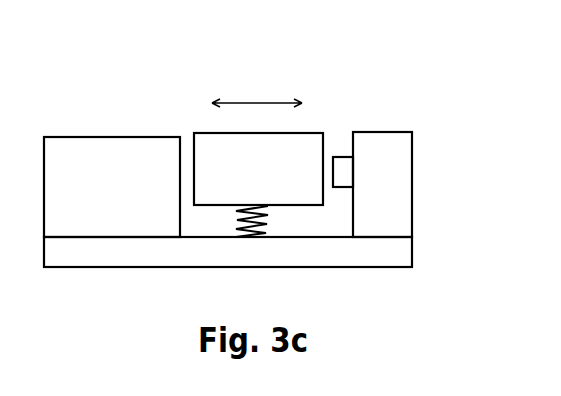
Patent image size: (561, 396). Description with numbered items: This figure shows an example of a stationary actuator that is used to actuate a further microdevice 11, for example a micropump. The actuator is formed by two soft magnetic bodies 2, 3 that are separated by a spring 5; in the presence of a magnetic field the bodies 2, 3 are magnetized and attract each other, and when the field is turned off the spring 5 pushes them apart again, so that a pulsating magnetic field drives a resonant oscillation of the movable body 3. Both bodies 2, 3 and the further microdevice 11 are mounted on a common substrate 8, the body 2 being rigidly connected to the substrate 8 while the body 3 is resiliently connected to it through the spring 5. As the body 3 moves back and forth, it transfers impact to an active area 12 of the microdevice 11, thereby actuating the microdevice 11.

The soft magnetic body 2 is at (109, 137).
The soft magnetic body 3 is at (319, 133).
The spring 5 is at (272, 215).
The common substrate 8 is at (415, 258).
The further microdevice 11 is at (412, 156).
The active area 12 is at (343, 157).